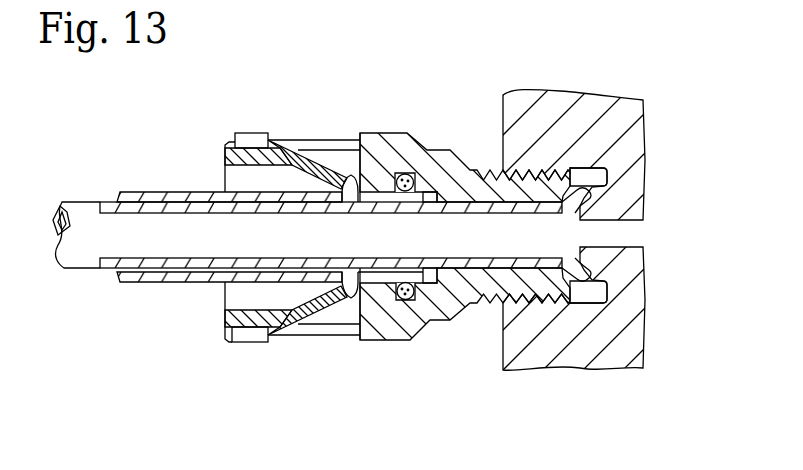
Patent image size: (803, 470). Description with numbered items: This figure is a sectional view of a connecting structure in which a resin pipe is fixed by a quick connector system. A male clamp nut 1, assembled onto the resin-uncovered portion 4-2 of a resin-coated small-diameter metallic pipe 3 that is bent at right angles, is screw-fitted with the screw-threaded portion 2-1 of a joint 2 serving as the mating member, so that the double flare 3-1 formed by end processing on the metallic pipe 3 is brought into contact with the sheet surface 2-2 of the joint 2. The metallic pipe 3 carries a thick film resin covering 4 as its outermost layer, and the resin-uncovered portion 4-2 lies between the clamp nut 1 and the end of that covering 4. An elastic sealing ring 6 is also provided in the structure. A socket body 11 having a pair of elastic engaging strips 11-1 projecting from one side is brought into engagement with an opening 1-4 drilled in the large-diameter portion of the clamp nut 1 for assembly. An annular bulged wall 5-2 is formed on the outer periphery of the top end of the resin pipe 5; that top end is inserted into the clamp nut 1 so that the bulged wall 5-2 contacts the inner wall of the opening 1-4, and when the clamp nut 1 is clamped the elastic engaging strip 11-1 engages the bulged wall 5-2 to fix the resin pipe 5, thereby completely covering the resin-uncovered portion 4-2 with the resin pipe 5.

The clamp nut 1 is at (392, 132).
The opening 1-4 is at (295, 139).
The socket body 11 is at (227, 143).
The elastic engaging strip 11-1 is at (323, 140).
The joint 2 is at (538, 91).
The screw-threaded portion 2-1 is at (570, 168).
The sheet surface 2-2 is at (600, 293).
The resin-coated small-diameter metallic pipe 3 is at (88, 202).
The double flare 3-1 is at (580, 195).
The thick film resin covering 4 is at (103, 202).
The resin-uncovered portion 4-2 is at (205, 268).
The resin pipe 5 is at (170, 192).
The annular bulged wall 5-2 is at (350, 175).
The elastic sealing ring 6 is at (405, 300).